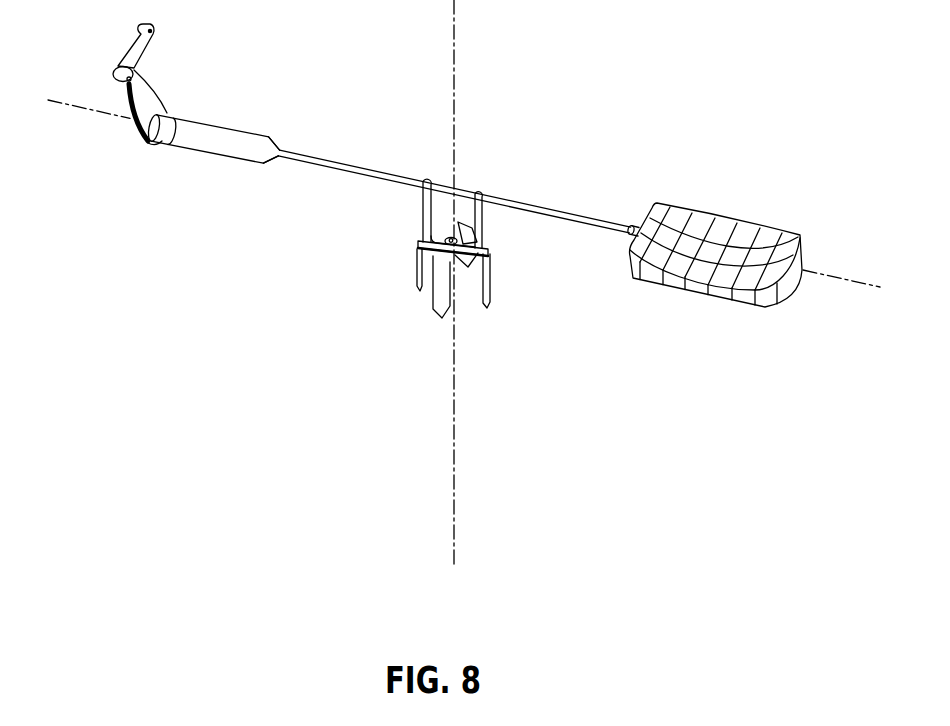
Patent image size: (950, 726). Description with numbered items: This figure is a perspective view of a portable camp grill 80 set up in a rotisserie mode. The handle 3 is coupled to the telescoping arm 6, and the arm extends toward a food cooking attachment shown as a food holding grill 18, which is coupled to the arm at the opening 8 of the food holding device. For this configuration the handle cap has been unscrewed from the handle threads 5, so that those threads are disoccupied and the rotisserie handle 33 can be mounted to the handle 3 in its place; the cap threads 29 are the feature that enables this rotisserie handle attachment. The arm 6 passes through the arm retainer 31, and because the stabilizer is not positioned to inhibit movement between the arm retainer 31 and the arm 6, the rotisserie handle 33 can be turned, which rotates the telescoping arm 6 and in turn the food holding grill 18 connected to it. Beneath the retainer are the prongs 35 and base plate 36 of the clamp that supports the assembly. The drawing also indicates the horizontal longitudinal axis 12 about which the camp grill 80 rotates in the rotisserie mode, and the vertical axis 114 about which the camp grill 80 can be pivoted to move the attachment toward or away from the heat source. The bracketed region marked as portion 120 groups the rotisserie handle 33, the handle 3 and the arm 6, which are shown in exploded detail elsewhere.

The handle 3 is at (258, 137).
The handle threads 5 is at (178, 118).
The telescoping arm 6 is at (533, 208).
The opening of a food cooking device 8 is at (632, 226).
The horizontal longitudinal axis 12 is at (857, 281).
The food holding grill 18 is at (723, 225).
The cap threads 29 is at (162, 133).
The arm retainer 31 is at (427, 215).
The rotisserie handle 33 is at (130, 117).
The prongs 35 is at (488, 287).
The clamp base plate 36 is at (420, 243).
The camp grill 80 is at (614, 83).
The vertical axis 114 is at (454, 487).
The portion of the camp grill 120 is at (267, 208).